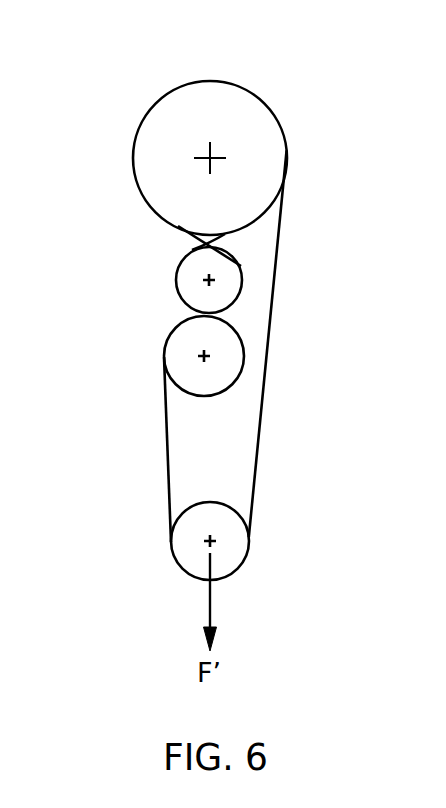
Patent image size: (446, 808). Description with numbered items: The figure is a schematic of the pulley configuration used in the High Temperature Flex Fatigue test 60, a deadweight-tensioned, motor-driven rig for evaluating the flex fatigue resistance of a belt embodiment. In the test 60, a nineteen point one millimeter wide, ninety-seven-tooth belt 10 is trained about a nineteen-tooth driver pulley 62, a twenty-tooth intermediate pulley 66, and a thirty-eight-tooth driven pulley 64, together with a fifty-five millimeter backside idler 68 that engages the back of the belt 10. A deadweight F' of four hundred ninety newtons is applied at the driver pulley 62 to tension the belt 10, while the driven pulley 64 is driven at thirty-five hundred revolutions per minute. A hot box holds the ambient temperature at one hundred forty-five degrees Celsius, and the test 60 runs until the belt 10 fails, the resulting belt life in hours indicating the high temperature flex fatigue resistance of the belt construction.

The HTFF test 60 is at (288, 83).
The belt 10 is at (278, 268).
The driven pulley 64 is at (158, 155).
The backside idler 68 is at (178, 279).
The intermediate pulley 66 is at (173, 352).
The driver pulley 62 is at (190, 547).